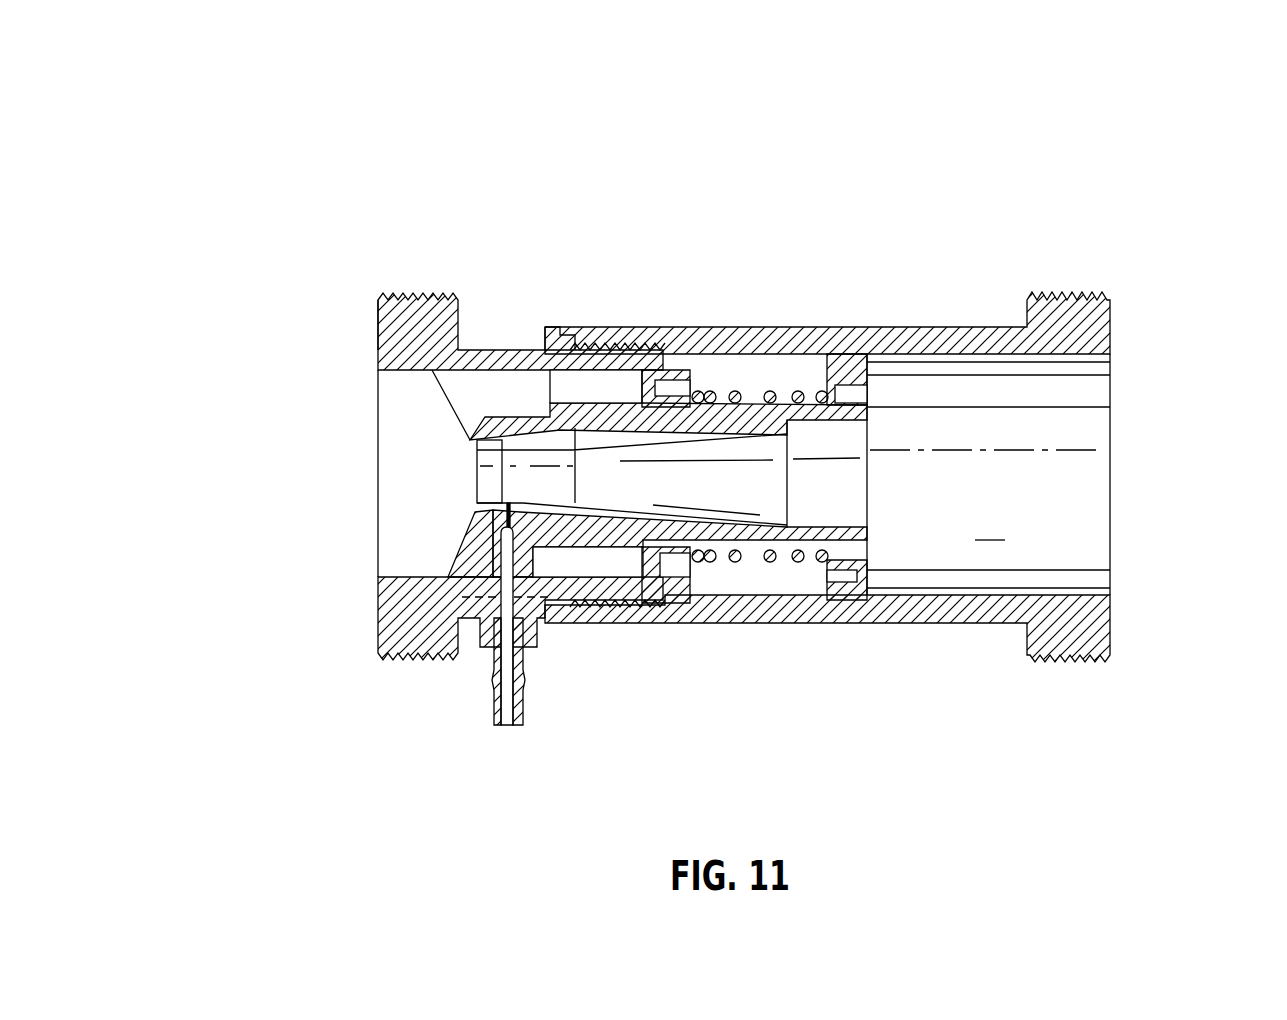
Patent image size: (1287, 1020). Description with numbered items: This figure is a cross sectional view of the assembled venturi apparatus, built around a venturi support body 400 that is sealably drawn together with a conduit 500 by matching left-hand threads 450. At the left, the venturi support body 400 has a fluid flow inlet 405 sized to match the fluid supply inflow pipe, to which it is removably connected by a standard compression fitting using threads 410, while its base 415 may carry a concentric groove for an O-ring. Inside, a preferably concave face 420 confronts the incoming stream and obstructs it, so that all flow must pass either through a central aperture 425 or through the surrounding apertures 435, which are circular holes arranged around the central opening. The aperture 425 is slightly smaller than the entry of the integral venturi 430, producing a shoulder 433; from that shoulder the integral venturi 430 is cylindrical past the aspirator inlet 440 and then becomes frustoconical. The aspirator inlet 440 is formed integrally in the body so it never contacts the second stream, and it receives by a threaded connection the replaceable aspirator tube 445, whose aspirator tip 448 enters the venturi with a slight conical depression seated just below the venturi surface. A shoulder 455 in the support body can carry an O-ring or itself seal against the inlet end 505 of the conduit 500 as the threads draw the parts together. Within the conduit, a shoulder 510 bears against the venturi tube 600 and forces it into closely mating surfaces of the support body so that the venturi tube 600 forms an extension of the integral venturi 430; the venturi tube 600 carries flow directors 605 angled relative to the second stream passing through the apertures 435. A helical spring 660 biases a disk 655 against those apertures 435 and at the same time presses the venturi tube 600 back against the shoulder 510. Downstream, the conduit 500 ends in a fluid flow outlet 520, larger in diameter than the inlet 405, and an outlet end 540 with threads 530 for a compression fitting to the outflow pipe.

The venturi support body 400 is at (517, 160).
The fluid flow inlet 405 is at (400, 510).
The threads 410 is at (405, 292).
The base 415 is at (378, 323).
The face 420 is at (477, 435).
The aperture 425 is at (477, 467).
The integral venturi 430 is at (522, 470).
The shoulder 433 is at (500, 440).
The apertures 435 is at (448, 390).
The aspirator inlet 440 is at (490, 553).
The aspirator tube 445 is at (487, 678).
The aspirator tip 448 is at (537, 500).
The left-hand thread 450 is at (603, 620).
The shoulder 455 is at (563, 325).
The conduit 500 is at (920, 655).
The inlet end 505 is at (570, 322).
The shoulder 510 is at (853, 363).
The fluid flow outlet 520 is at (915, 435).
The threads 530 is at (1060, 290).
The outlet end 540 is at (1117, 333).
The venturi tube 600 is at (757, 403).
The flow directors 605 is at (840, 362).
The disk 655 is at (647, 627).
The helical spring 660 is at (768, 562).